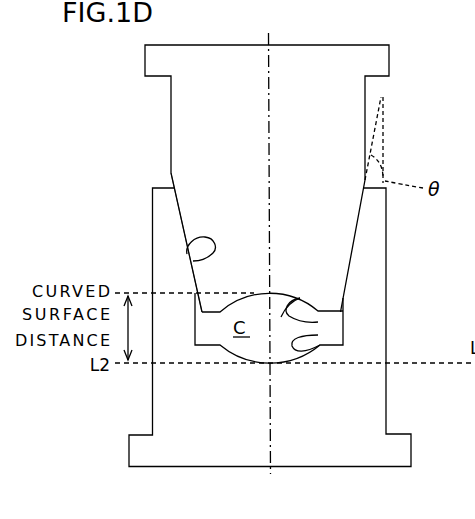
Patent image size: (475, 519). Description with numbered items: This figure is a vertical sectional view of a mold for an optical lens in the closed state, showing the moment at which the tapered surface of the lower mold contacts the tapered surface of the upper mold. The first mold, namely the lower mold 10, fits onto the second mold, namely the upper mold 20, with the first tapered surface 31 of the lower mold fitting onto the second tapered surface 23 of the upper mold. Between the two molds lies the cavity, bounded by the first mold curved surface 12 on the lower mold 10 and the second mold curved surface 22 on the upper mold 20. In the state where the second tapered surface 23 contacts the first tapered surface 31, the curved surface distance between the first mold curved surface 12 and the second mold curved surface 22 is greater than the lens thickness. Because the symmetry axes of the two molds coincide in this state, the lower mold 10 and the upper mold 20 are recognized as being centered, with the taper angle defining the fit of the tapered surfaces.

The first mold 10 is at (146, 420).
The first mold curved surface 12 is at (318, 335).
The second mold 20 is at (153, 62).
The second mold curved surface 22 is at (318, 322).
The second tapered surface 23 is at (181, 222).
The first tapered surface 31 is at (193, 260).